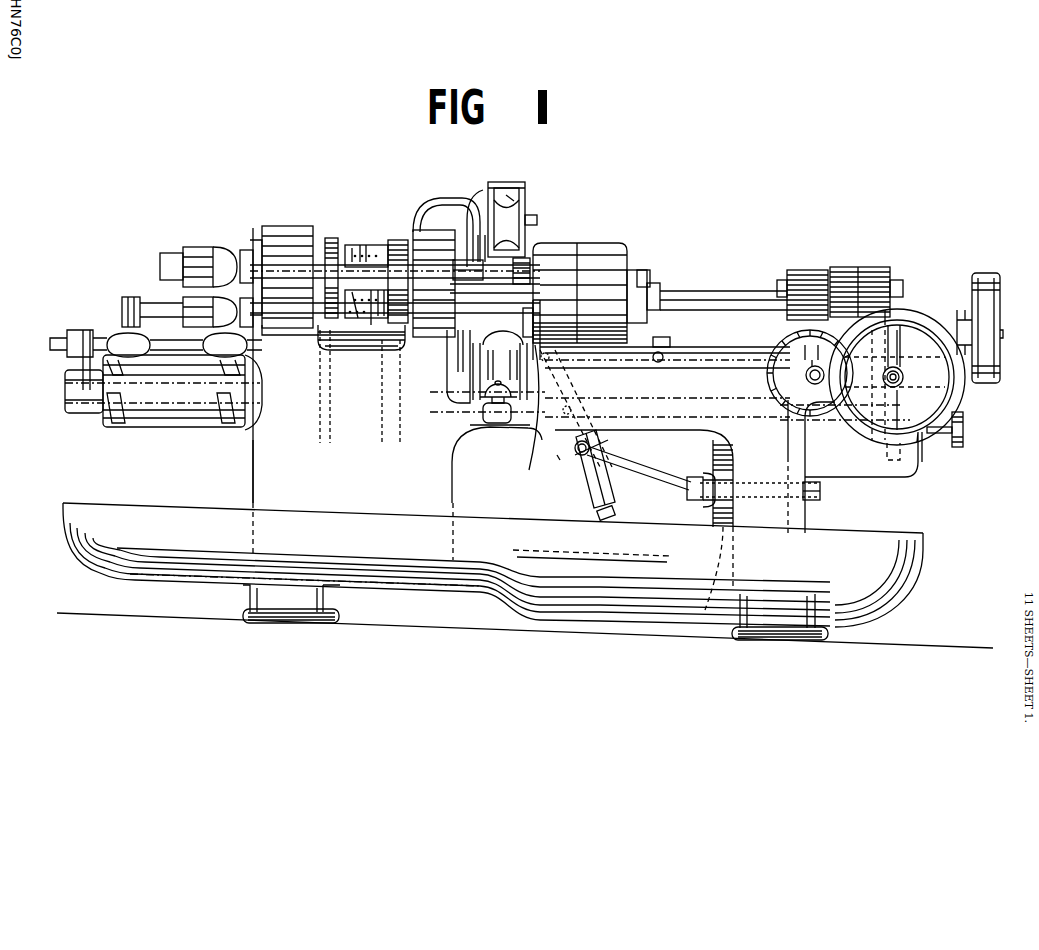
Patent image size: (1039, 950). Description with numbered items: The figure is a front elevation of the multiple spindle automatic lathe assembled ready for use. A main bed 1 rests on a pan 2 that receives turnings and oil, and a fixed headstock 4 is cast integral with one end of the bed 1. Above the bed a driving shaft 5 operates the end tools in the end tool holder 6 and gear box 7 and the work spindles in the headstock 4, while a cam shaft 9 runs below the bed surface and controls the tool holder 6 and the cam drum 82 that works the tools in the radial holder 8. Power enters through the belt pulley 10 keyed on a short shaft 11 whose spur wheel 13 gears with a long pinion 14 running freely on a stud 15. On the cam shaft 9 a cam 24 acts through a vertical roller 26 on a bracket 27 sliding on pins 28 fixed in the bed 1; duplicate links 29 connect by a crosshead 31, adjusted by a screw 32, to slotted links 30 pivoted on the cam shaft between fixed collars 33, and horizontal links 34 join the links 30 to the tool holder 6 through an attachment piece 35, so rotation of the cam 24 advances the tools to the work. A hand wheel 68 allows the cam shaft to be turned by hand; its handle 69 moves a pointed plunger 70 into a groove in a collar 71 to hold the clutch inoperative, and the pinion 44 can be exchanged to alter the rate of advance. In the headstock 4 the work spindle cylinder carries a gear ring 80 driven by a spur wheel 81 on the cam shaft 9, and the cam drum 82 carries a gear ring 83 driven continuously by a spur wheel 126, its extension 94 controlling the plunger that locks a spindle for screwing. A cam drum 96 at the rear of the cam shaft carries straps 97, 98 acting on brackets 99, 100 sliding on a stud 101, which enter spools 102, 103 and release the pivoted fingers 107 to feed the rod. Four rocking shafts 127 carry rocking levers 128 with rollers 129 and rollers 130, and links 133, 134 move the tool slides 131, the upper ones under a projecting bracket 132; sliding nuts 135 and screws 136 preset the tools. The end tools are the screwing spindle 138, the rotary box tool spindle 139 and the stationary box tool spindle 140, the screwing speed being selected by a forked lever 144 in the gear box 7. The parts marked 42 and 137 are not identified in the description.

The main bed 1 is at (452, 477).
The pan 2 is at (63, 516).
The fixed headstock 4 is at (284, 228).
The driving shaft 5 is at (693, 297).
The end tool holder 6 is at (571, 256).
The gear box 7 is at (600, 262).
The radial holder 8 is at (522, 207).
The cam shaft 9 is at (283, 405).
The pulley 10 is at (986, 273).
The short longitudinal shaft 11 is at (965, 320).
The spur wheel 13 is at (880, 325).
The long pinion 14 is at (872, 277).
The stud 15 is at (824, 290).
The cam 24 is at (710, 450).
The vertical roller 26 is at (763, 487).
The bracket 27 is at (716, 509).
The pins 28 is at (820, 493).
The duplicate links 29 is at (655, 470).
The duplicate links 30 is at (612, 500).
The crosshead 31 is at (589, 447).
The screw 32 is at (595, 478).
The fixed collars 33 is at (566, 472).
The horizontal links 34 is at (598, 360).
The attachment piece 35 is at (670, 341).
The gear 42 is at (778, 340).
The pinion 44 is at (805, 376).
The hand wheel 68 is at (960, 398).
The handle 69 is at (902, 372).
The pointed plunger 70 is at (905, 385).
The collar 71 is at (886, 379).
The gear ring 80 is at (398, 243).
The spur wheel 81 is at (403, 448).
The cam drum 82 is at (377, 250).
The gear ring 83 is at (331, 240).
The extension 94 is at (325, 262).
The cam drum 96 is at (165, 410).
The cam strap 97 is at (115, 420).
The cam strap 98 is at (228, 420).
The bracket 99 is at (113, 340).
The bracket 100 is at (217, 344).
The stud 101 is at (165, 342).
The spool 102 is at (130, 300).
The spool 103 is at (240, 305).
The pivoted fingers 107 is at (213, 250).
The spur wheel 126 is at (330, 448).
The rocking shafts 127 is at (317, 267).
The rocking lever 128 is at (358, 243).
The rollers 129 is at (388, 300).
The rollers 130 is at (355, 247).
The tool slides 131 is at (512, 195).
The projecting bracket 132 is at (460, 200).
The links 133 is at (450, 217).
The links 134 is at (472, 212).
The sliding nuts 135 is at (547, 413).
The screws 136 is at (517, 200).
The bearing 137 is at (500, 410).
The screwing spindle 138 is at (486, 272).
The rotary box tool spindle 139 is at (527, 260).
The stationary box tool spindle 140 is at (530, 318).
The forked lever 144 is at (505, 375).